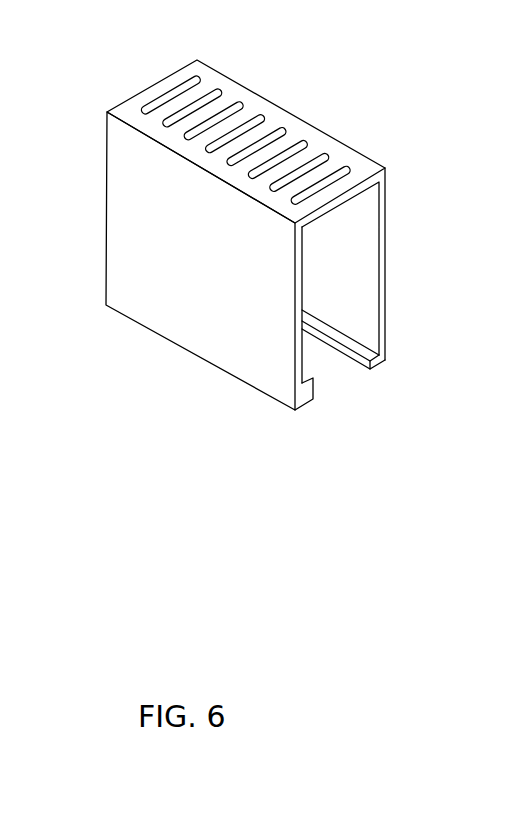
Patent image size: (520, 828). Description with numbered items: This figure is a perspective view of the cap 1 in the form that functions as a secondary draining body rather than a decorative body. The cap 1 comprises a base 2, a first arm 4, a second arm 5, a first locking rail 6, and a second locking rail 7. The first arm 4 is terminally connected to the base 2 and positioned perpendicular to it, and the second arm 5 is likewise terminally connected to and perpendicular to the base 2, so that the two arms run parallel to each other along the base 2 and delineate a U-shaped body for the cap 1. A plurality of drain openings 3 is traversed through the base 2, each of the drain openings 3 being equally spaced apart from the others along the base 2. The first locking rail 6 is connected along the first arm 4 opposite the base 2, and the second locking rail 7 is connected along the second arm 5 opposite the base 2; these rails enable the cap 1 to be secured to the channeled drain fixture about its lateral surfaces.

The cap 1 is at (264, 236).
The base 2 is at (198, 63).
The plurality of drain openings 3 is at (222, 90).
The first arm 4 is at (106, 245).
The second arm 5 is at (384, 277).
The first locking rail 6 is at (305, 396).
The second locking rail 7 is at (372, 364).